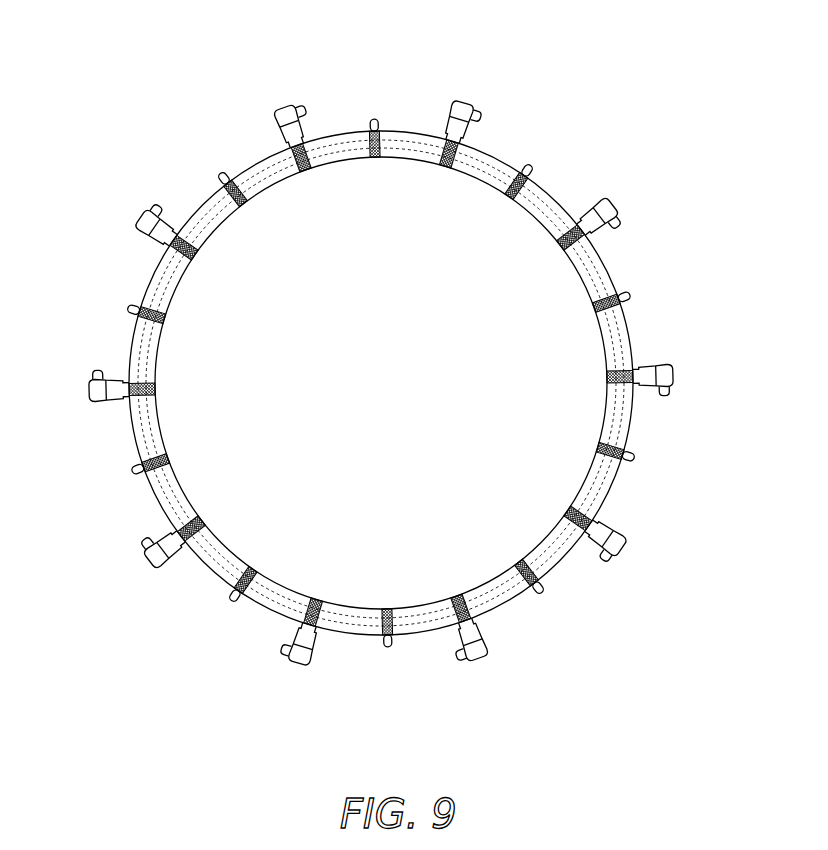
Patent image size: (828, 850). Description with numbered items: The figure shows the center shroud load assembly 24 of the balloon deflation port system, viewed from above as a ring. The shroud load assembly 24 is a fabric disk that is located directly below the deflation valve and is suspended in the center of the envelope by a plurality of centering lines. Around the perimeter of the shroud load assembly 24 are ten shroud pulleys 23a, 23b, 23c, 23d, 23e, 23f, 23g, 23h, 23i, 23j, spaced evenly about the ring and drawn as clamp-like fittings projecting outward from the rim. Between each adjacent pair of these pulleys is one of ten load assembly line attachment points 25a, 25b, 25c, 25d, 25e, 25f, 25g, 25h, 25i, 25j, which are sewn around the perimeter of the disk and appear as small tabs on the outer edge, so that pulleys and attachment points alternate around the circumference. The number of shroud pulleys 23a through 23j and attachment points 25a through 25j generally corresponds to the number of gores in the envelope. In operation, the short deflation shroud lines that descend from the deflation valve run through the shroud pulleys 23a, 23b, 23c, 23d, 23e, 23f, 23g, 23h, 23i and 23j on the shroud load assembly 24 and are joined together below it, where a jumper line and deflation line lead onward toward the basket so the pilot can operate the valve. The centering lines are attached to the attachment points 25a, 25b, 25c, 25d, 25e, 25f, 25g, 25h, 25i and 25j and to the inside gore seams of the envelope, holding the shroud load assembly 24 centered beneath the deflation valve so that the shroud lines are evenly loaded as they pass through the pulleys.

The shroud load assembly 24 is at (193, 96).
The shroud pulley 23a is at (478, 106).
The shroud pulley 23b is at (622, 214).
The shroud pulley 23c is at (678, 388).
The shroud pulley 23d is at (609, 572).
The shroud pulley 23e is at (468, 670).
The shroud pulley 23f is at (284, 660).
The shroud pulley 23g is at (142, 548).
The shroud pulley 23h is at (88, 378).
The shroud pulley 23i is at (148, 204).
The shroud pulley 23j is at (302, 105).
The load assembly line attachment point 25a is at (536, 166).
The load assembly line attachment point 25b is at (632, 297).
The load assembly line attachment point 25c is at (636, 458).
The load assembly line attachment point 25d is at (542, 596).
The load assembly line attachment point 25e is at (388, 648).
The load assembly line attachment point 25f is at (226, 600).
The load assembly line attachment point 25g is at (128, 470).
The load assembly line attachment point 25h is at (128, 306).
The load assembly line attachment point 25i is at (222, 168).
The load assembly line attachment point 25j is at (376, 120).